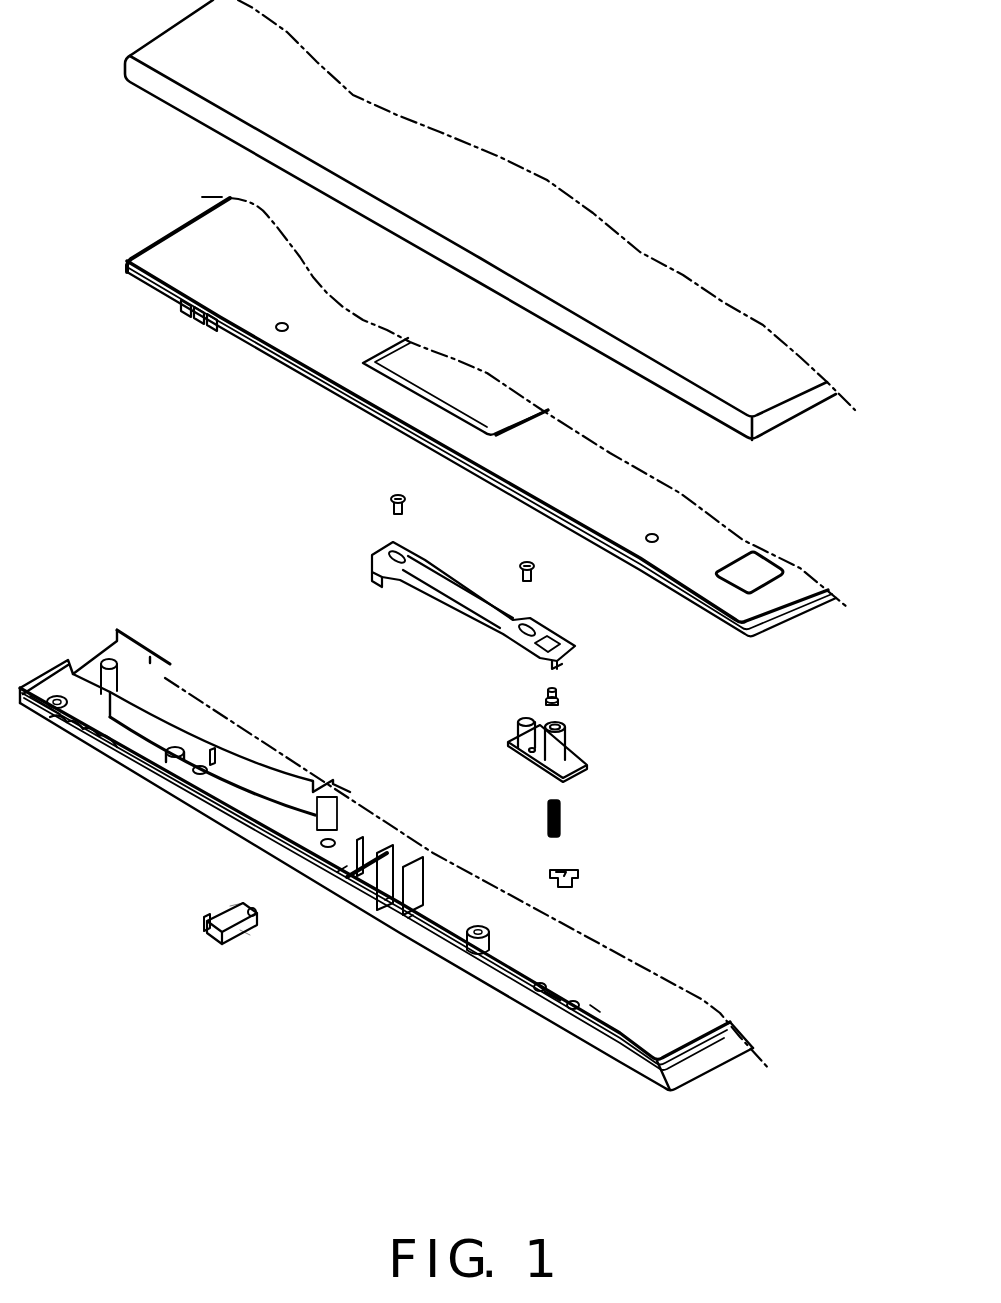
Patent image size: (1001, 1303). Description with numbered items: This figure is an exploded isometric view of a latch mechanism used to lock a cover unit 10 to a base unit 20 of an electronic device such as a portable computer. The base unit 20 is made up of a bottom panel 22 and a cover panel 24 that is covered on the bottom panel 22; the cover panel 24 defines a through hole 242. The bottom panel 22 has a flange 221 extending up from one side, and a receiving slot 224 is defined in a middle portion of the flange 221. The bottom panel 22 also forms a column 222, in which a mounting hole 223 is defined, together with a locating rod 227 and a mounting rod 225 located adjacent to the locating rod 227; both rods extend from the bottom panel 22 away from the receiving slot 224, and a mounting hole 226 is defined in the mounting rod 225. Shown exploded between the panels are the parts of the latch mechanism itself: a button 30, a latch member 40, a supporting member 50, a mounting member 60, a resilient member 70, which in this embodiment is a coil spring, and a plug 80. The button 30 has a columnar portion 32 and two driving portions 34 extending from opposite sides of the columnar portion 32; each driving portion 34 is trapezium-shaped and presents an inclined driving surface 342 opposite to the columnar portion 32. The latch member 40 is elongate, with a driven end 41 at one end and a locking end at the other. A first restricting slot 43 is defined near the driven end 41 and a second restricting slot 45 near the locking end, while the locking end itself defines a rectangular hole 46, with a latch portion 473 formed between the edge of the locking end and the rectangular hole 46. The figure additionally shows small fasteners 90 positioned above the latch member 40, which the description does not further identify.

The cover unit 10 is at (503, 188).
The base unit 20 is at (824, 730).
The bottom panel 22 is at (414, 893).
The cover panel 24 is at (487, 483).
The flange 221 is at (122, 763).
The column 222 is at (410, 923).
The mounting hole 223 is at (388, 905).
The receiving slot 224 is at (338, 887).
The mounting rod 225 is at (552, 1002).
The mounting hole 226 is at (533, 992).
The locating rod 227 is at (590, 1005).
The through hole 242 is at (657, 535).
The button 30 is at (214, 927).
The columnar portion 32 is at (252, 912).
The driving portion 34 is at (217, 917).
The inclined driving surface 342 is at (250, 940).
The latch member 40 is at (484, 594).
The driven end 41 is at (375, 553).
The first restricting slot 43 is at (393, 556).
The second restricting slot 45 is at (525, 630).
The rectangular hole 46 is at (552, 642).
The latch portion 473 is at (573, 655).
The supporting member 50 is at (570, 755).
The mounting member 60 is at (572, 870).
The resilient member 70 is at (562, 812).
The plug 80 is at (565, 698).
The screw 90 is at (396, 498).